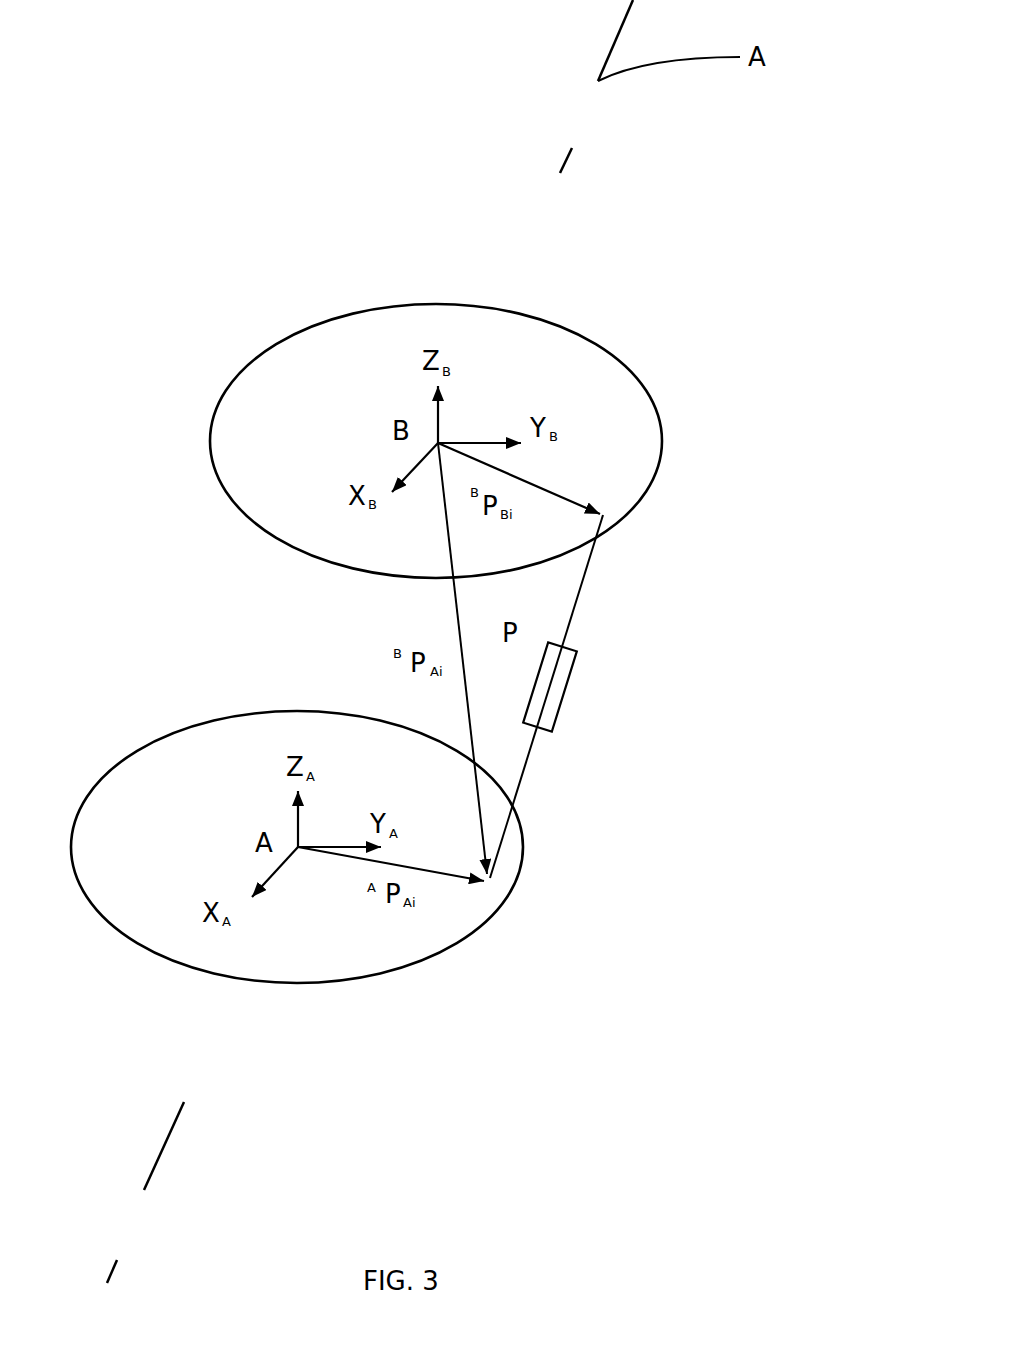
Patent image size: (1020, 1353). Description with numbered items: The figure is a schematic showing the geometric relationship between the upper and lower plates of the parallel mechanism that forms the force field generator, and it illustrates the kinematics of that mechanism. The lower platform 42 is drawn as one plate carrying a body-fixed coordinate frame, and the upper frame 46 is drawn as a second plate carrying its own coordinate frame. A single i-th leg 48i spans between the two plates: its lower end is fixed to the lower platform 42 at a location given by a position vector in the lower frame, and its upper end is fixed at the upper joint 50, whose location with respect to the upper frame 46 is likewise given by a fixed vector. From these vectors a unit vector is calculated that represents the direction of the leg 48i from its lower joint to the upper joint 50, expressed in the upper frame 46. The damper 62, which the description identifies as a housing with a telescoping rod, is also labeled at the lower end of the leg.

The upper frame 46 is at (597, 342).
The upper joint 50 is at (627, 522).
The actuator strut / leg i 48i is at (590, 697).
The damper 62 is at (523, 863).
The lower platform 42 is at (448, 948).